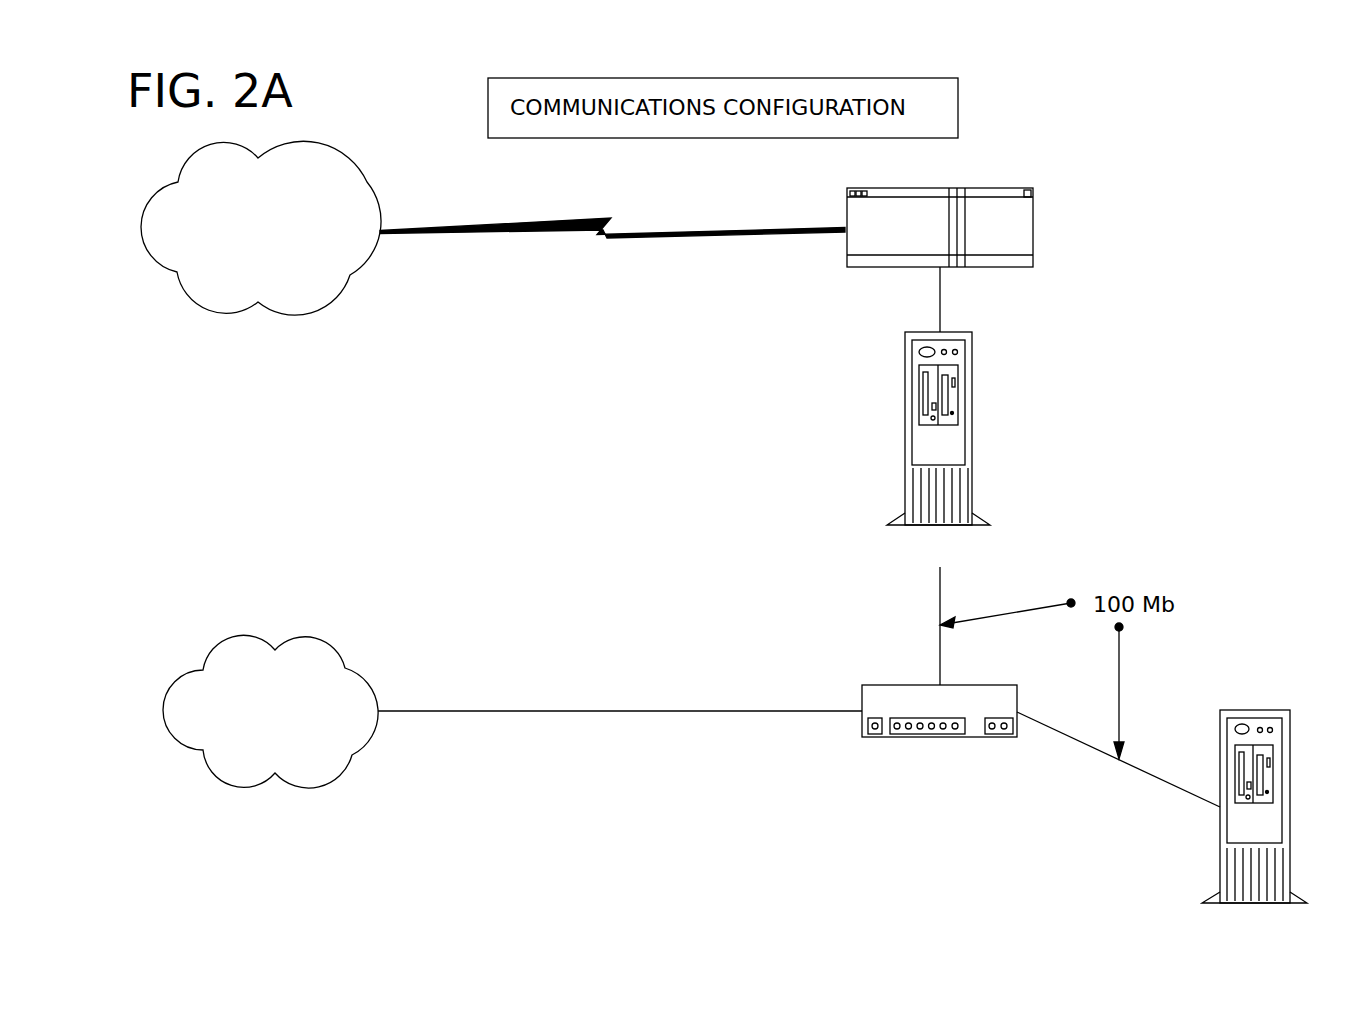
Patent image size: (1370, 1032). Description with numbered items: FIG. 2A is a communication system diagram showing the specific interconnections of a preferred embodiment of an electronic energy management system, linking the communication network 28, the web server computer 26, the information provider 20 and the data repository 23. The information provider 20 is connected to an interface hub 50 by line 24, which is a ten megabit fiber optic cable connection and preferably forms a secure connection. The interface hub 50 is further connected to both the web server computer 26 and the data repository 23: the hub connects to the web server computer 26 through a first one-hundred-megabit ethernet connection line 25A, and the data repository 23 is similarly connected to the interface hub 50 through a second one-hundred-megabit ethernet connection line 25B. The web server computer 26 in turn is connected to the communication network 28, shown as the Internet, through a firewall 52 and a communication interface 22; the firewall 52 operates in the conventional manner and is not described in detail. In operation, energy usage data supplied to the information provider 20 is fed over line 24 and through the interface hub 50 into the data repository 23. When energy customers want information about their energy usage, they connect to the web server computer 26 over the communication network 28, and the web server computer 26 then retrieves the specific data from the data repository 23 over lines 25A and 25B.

The communication network 28 is at (372, 192).
The communication interface 22 is at (606, 222).
The firewall 52 is at (1033, 214).
The web server computer 26 is at (972, 372).
The first 100 Mb ethernet connection line 25A is at (938, 605).
The interface hub 50 is at (900, 684).
The second 100 Mb ethernet connection line 25B is at (1150, 772).
The data repository 23 is at (1290, 810).
The information provider 20 is at (358, 758).
The line 24 is at (602, 712).